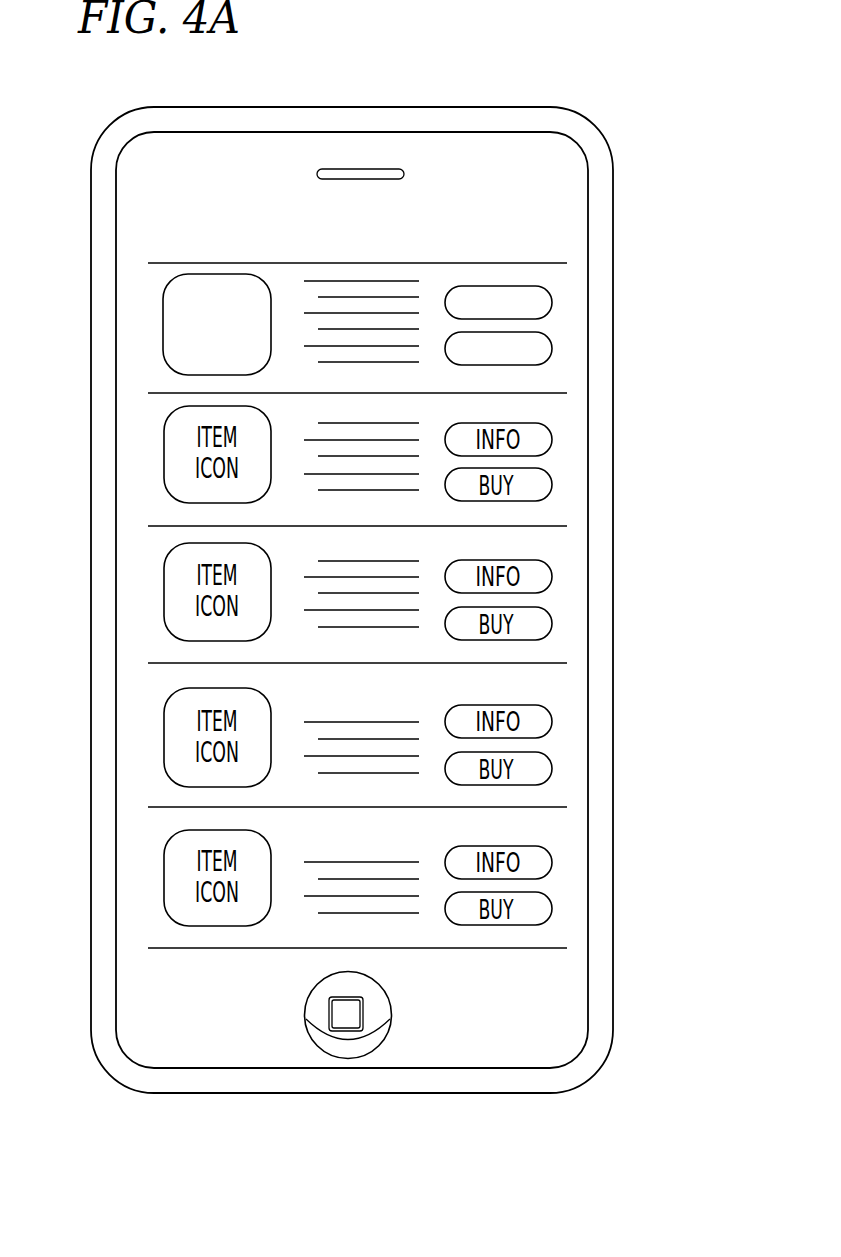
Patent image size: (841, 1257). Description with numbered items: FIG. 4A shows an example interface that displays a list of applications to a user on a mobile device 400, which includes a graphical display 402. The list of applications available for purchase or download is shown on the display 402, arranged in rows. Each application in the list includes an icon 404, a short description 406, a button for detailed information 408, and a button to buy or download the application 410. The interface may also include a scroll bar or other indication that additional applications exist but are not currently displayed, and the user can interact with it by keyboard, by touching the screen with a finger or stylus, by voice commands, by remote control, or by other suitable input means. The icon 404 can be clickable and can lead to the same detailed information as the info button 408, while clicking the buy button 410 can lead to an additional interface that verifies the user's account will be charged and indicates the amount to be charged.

The mobile device 400 is at (359, 1102).
The graphical display 402 is at (352, 258).
The icon 404 is at (168, 325).
The short description 406 is at (378, 296).
The button for detailed information 408 is at (553, 300).
The button to buy or download the application 410 is at (553, 350).